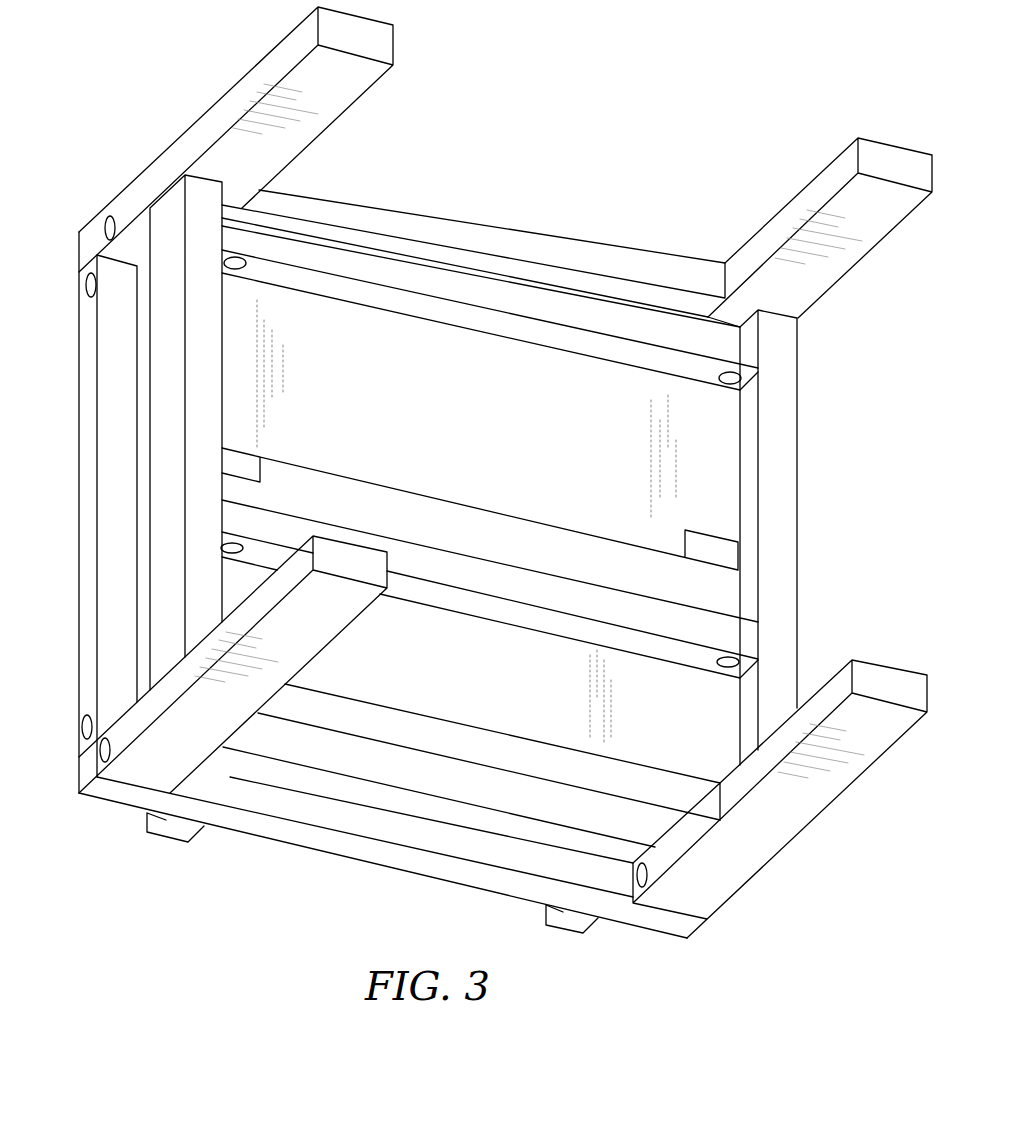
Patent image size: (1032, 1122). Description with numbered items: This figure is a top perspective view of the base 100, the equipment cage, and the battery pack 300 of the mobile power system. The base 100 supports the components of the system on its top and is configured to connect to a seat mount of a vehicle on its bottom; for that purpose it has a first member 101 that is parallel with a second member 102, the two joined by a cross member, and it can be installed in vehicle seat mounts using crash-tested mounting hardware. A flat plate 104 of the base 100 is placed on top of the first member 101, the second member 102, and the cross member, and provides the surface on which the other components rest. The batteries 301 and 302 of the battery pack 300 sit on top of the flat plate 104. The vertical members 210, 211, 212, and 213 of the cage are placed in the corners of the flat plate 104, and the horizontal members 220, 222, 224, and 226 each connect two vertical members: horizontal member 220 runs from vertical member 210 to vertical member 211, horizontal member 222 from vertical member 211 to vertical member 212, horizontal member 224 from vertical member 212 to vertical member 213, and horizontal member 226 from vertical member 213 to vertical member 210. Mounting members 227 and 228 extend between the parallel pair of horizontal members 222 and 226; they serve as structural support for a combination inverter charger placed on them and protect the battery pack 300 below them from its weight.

The base 100 is at (316, 837).
The first member 101 is at (170, 827).
The second member 102 is at (567, 922).
The flat plate 104 is at (458, 873).
The vertical member 210 is at (150, 770).
The vertical member 211 is at (790, 823).
The vertical member 212 is at (838, 262).
The vertical member 213 is at (244, 100).
The horizontal member 220 is at (475, 792).
The horizontal member 222 is at (782, 563).
The horizontal member 224 is at (458, 217).
The horizontal member 226 is at (167, 453).
The mounting member 227 is at (498, 580).
The mounting member 228 is at (627, 320).
The battery pack 300 is at (697, 479).
The battery 301 is at (540, 685).
The battery 302 is at (475, 420).